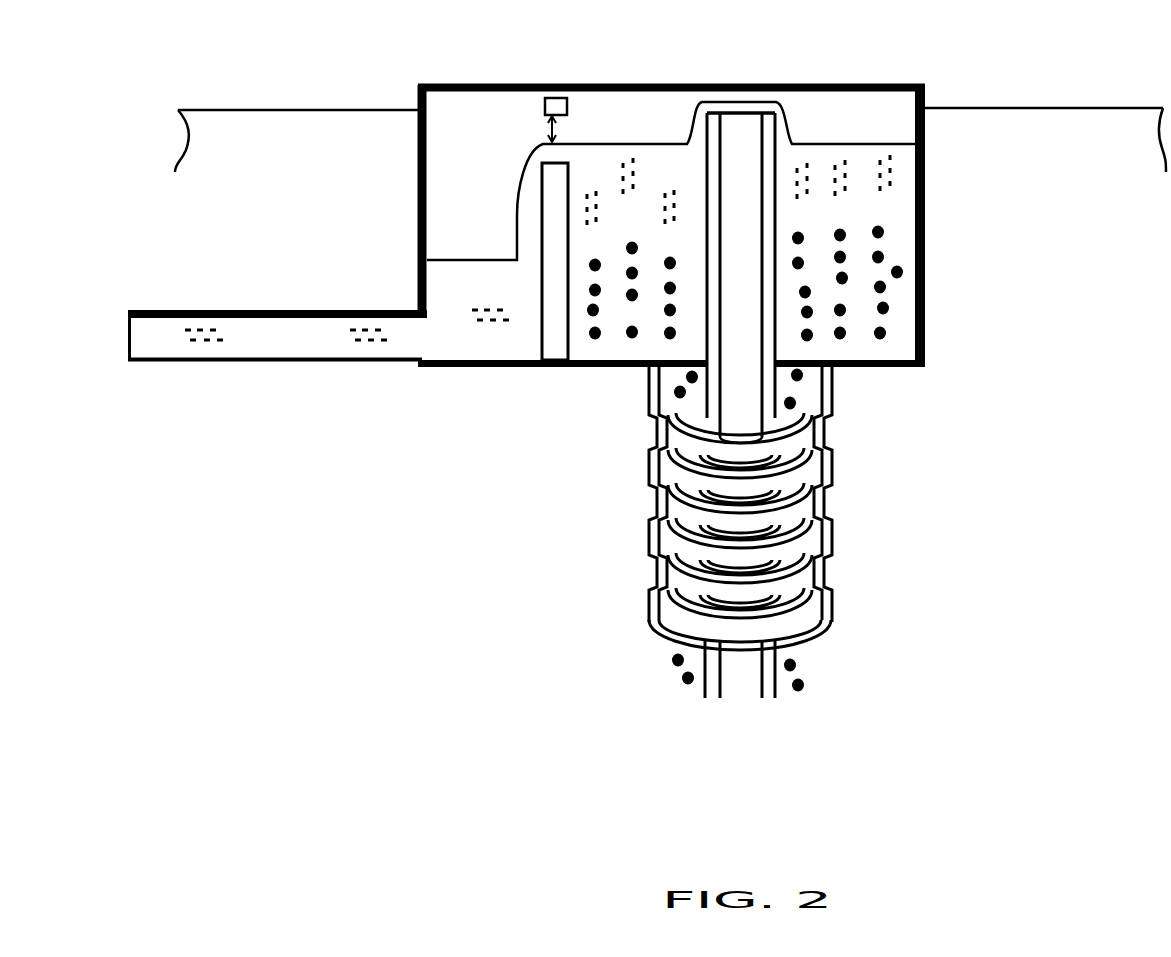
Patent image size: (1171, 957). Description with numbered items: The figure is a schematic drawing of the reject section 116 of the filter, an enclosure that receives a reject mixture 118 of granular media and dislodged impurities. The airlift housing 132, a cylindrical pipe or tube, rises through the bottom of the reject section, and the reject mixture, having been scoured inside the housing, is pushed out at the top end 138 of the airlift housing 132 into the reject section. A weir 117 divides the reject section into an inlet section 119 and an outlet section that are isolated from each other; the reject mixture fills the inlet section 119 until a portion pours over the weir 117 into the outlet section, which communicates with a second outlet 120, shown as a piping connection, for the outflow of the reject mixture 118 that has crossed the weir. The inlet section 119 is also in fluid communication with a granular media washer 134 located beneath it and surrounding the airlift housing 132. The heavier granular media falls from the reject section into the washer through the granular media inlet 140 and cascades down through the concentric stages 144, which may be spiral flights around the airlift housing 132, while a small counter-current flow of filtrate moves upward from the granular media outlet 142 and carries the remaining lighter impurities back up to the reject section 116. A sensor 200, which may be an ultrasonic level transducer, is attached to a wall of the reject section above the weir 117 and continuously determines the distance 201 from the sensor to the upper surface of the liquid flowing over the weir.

The reject section 116 is at (925, 220).
The weir 117 is at (555, 328).
The reject mixture 118 is at (383, 342).
The inlet section 119 is at (905, 292).
The second outlet 120 is at (362, 358).
The airlift housing 132 is at (760, 380).
The granular media washer 134 is at (832, 500).
The top end of the airlift housing 138 is at (768, 120).
The granular media inlet 140 is at (692, 365).
The granular media outlet 142 is at (787, 643).
The concentric stages 144 is at (690, 504).
The sensor 200 is at (553, 107).
The distance 201 is at (557, 133).